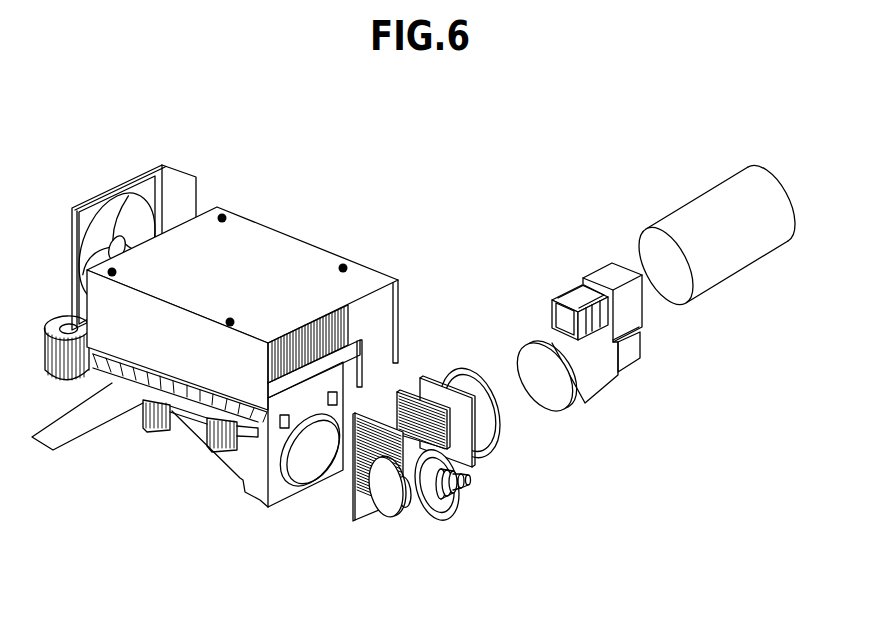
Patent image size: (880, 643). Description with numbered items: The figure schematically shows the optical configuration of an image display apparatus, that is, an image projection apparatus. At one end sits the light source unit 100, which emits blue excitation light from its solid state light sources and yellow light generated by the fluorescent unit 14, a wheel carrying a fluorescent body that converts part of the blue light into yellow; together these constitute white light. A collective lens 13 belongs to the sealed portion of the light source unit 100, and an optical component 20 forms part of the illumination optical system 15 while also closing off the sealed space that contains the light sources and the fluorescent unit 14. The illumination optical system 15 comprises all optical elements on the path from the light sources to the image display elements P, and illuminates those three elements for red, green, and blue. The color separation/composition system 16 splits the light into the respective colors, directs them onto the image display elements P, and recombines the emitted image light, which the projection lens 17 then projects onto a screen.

The light source unit 100 is at (440, 594).
The collective lens 13 is at (384, 511).
The fluorescent unit 14 is at (471, 521).
The illumination optical system 15 is at (494, 465).
The color separation/composition system 16 is at (611, 338).
The projection lens 17 is at (824, 302).
The optical component 20 is at (402, 392).
The image display elements P is at (555, 318).